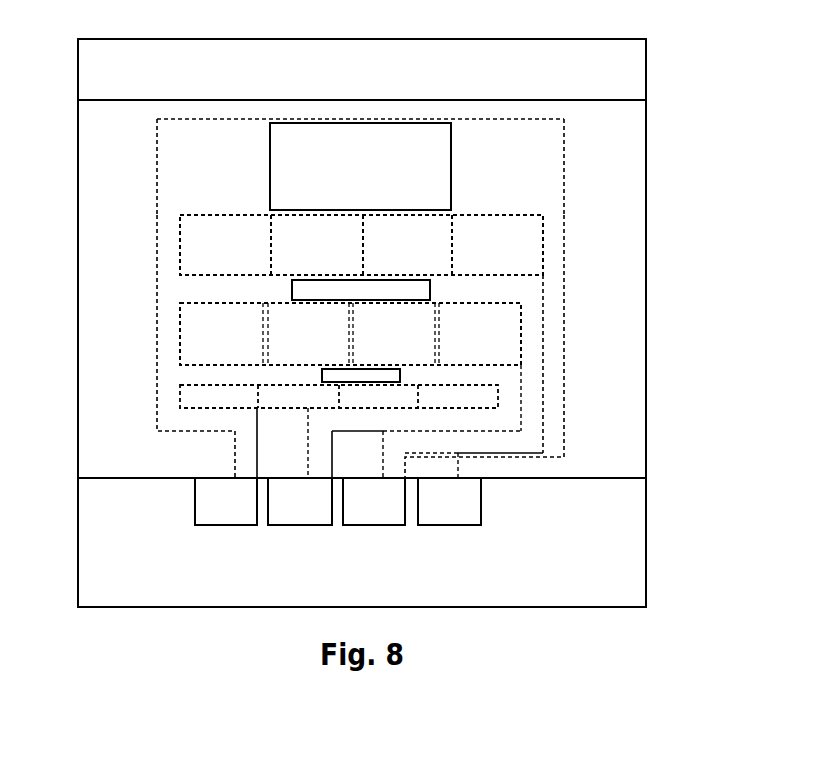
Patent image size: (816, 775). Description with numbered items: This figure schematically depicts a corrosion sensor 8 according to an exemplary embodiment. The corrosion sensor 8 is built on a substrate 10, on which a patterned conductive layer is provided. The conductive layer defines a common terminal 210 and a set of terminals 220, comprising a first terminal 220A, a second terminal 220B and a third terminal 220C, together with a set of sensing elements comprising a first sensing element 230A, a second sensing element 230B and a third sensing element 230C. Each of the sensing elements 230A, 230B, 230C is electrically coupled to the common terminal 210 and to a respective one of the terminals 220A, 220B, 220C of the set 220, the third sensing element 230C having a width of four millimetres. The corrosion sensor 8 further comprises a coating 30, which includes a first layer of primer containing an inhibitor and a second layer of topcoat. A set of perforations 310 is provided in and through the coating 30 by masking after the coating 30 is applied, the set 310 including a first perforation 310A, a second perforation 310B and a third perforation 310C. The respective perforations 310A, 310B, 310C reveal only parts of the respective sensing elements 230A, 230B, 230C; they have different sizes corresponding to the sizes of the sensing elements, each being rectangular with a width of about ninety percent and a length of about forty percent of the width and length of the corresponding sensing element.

The substrate 10 is at (78, 607).
The coating 30 is at (590, 466).
The set of perforations 310 is at (360, 247).
The first perforation 310A is at (367, 367).
The second perforation 310B is at (377, 279).
The third perforation 310C is at (452, 122).
The first sensing element 230A is at (350, 378).
The second sensing element 230B is at (342, 290).
The third sensing element 230C is at (342, 135).
The common terminal 210 is at (195, 525).
The set of terminals 220 is at (401, 541).
The first terminal 220A is at (332, 525).
The second terminal 220B is at (405, 525).
The third terminal 220C is at (481, 525).
The corrosion sensor 8 is at (704, 572).